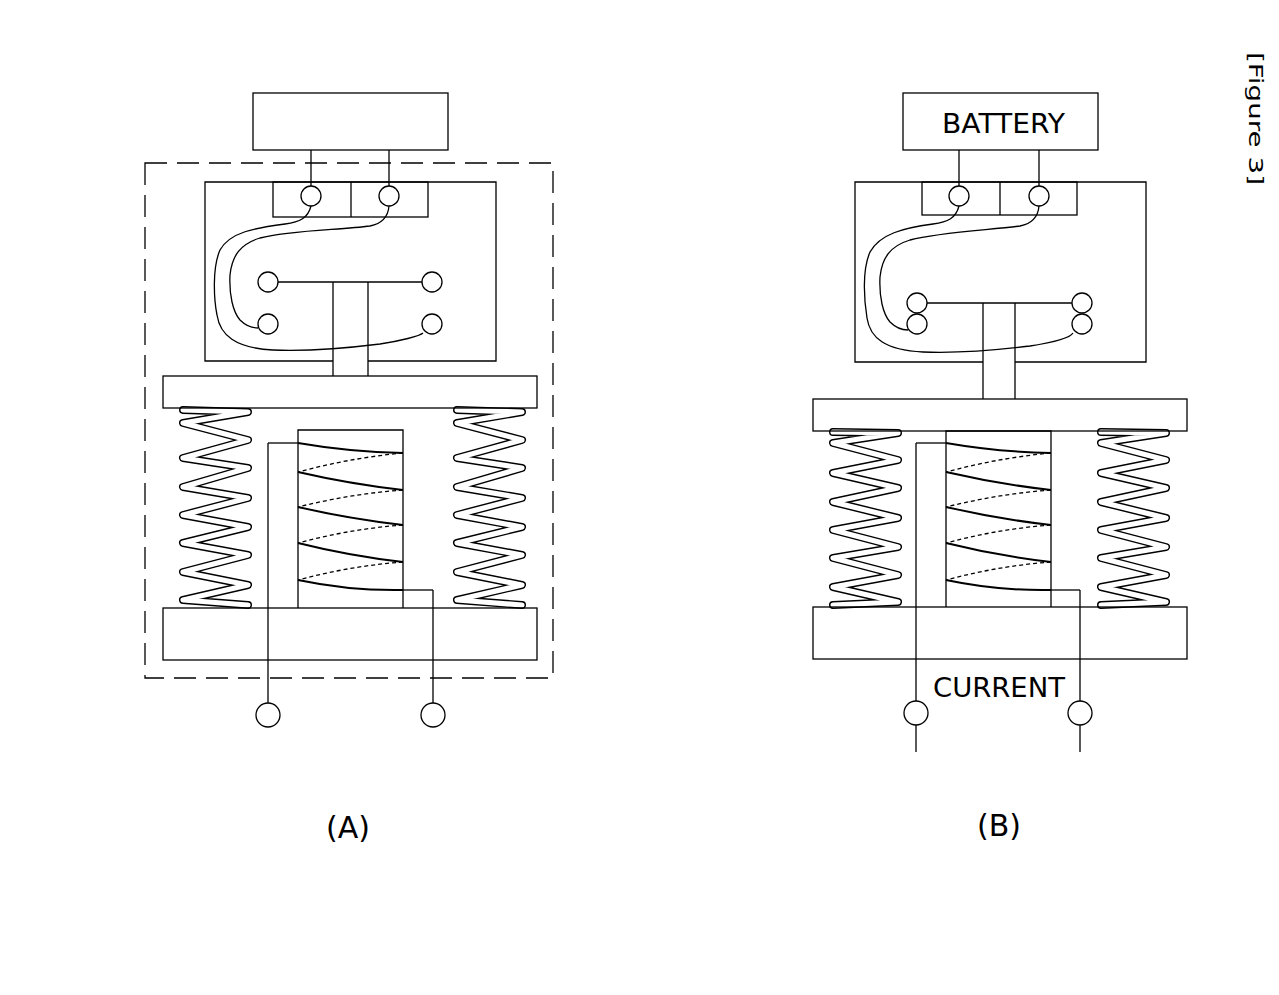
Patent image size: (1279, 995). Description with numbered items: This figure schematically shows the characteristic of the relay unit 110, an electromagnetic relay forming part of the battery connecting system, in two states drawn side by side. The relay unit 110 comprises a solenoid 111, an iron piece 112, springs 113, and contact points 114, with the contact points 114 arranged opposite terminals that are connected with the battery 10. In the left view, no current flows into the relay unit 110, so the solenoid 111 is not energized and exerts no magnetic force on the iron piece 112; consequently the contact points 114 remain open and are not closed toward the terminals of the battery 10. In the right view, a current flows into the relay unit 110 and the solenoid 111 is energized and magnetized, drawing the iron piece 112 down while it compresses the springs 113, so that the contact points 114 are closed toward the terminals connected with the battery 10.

The battery 10 is at (448, 120).
The relay unit 110 is at (557, 637).
The solenoid 111 is at (348, 605).
The iron piece 112 is at (508, 393).
The springs 113 is at (515, 472).
The contact points 114 is at (442, 282).